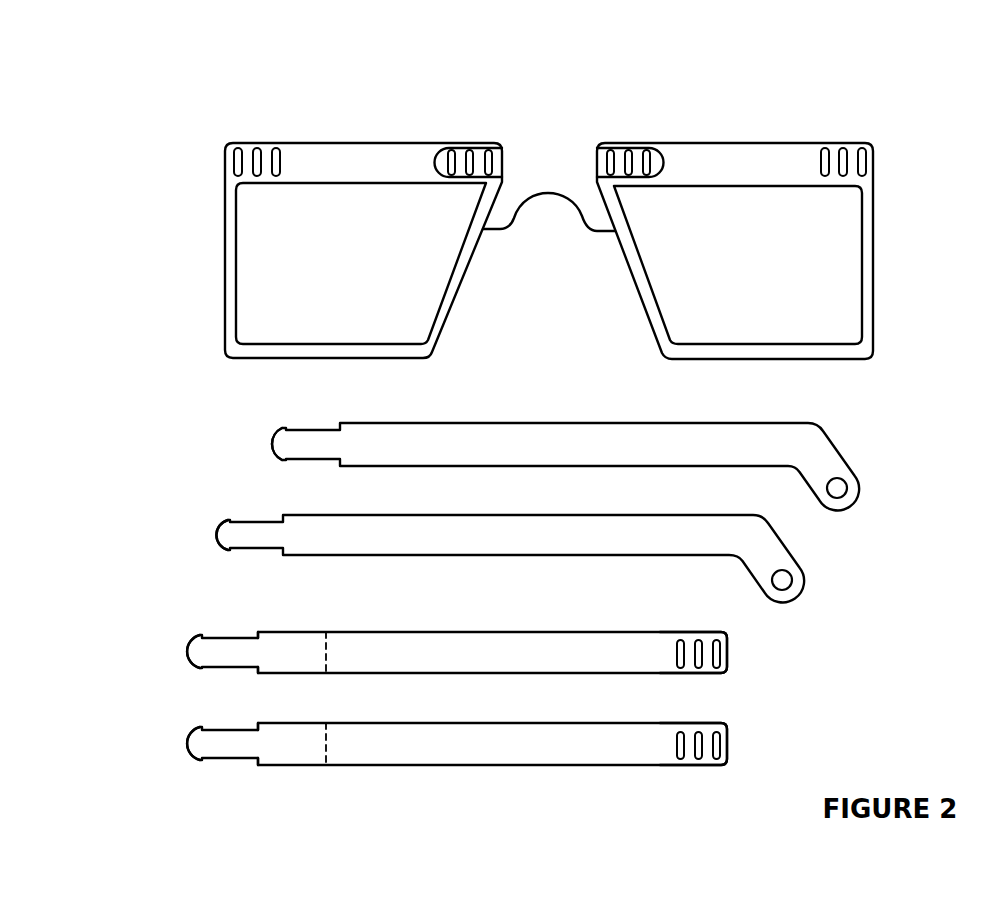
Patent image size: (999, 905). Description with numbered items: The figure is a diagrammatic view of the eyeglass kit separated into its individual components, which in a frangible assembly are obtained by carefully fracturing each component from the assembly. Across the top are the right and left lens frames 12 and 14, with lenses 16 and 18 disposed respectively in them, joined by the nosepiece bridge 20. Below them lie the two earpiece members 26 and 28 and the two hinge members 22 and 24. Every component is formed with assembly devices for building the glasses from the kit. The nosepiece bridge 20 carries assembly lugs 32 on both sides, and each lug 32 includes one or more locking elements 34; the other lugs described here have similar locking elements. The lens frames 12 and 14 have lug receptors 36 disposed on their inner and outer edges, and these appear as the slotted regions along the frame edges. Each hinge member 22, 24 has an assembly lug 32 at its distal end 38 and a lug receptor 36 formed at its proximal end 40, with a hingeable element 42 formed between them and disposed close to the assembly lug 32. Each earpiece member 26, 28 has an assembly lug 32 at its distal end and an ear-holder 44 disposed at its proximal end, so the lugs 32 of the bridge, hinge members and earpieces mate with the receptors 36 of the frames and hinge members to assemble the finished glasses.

The right lens frame 12 is at (873, 218).
The left lens frame 14 is at (225, 222).
The lens 16 is at (815, 270).
The lens 18 is at (272, 280).
The nosepiece bridge 20 is at (583, 212).
The hinge member 22 is at (400, 723).
The hinge member 24 is at (468, 630).
The earpiece member 26 is at (540, 422).
The earpiece member 28 is at (470, 516).
The assembly lug 32 is at (618, 148).
The locking element 34 is at (197, 635).
The lug receptor 36 is at (252, 148).
The distal end 38 is at (300, 619).
The proximal end 40 is at (645, 681).
The hingeable element 42 is at (330, 650).
The ear-holder 44 is at (802, 580).